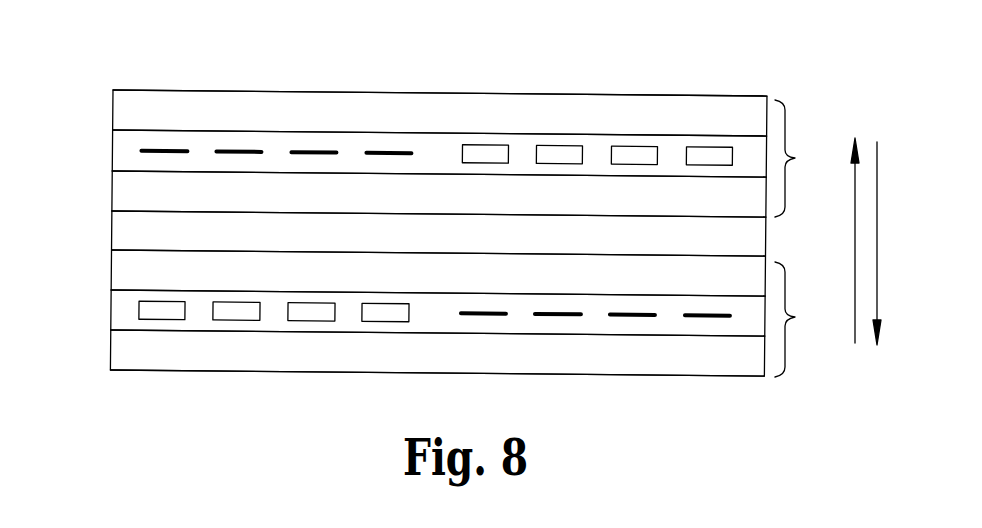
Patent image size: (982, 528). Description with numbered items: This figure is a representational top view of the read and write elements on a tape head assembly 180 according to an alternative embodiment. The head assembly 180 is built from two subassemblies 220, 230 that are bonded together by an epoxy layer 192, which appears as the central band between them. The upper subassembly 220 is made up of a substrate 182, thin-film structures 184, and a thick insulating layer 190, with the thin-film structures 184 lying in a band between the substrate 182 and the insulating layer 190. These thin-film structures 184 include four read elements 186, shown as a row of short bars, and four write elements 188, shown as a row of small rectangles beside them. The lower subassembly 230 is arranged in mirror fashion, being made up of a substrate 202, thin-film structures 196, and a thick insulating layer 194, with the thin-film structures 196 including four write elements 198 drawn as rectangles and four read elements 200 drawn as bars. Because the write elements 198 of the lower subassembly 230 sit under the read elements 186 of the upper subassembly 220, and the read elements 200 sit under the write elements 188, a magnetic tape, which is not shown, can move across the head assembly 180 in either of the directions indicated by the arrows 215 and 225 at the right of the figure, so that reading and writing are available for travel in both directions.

The head assembly 180 is at (495, 55).
The substrate 182 is at (363, 110).
The thin-film structures 184 is at (163, 138).
The read elements 186 is at (222, 152).
The write elements 188 is at (633, 152).
The thick insulating layer 190 is at (277, 192).
The epoxy layer 192 is at (143, 230).
The thick insulating layer 194 is at (348, 280).
The thin-film structures 196 is at (273, 315).
The write elements 198 is at (230, 315).
The read elements 200 is at (697, 317).
The substrate 202 is at (390, 360).
The subassembly 220 is at (808, 158).
The subassembly 230 is at (808, 319).
The arrow 225 is at (877, 158).
The arrow 215 is at (855, 318).